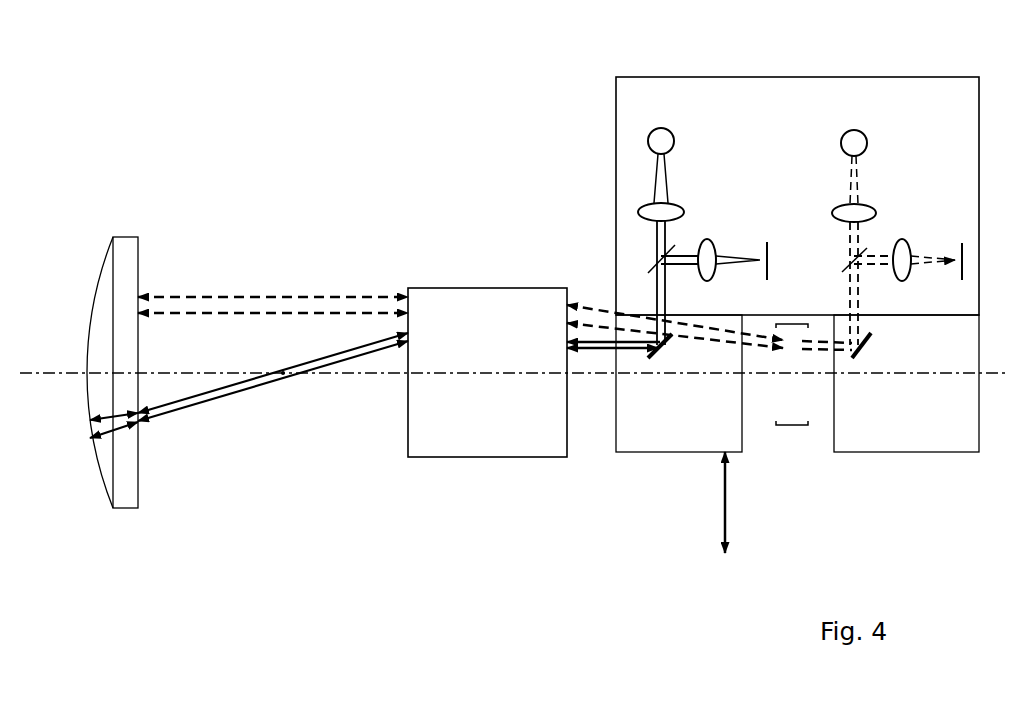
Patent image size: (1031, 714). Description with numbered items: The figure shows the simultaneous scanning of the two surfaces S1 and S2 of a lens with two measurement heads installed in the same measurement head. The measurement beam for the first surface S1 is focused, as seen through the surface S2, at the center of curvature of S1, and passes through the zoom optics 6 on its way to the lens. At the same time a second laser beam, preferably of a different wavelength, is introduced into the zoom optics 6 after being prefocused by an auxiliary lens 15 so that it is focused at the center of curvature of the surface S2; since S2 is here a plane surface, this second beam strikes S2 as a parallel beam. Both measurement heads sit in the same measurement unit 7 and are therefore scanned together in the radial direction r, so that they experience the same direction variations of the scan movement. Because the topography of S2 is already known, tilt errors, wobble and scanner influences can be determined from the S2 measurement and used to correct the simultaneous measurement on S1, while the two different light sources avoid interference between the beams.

The zoom optics 6 is at (486, 289).
The measurement unit 7 is at (795, 78).
The auxiliary lens 15 is at (796, 428).
The first surface S1 is at (229, 392).
The second surface S2 is at (273, 289).
The radial displacement distance r is at (713, 503).